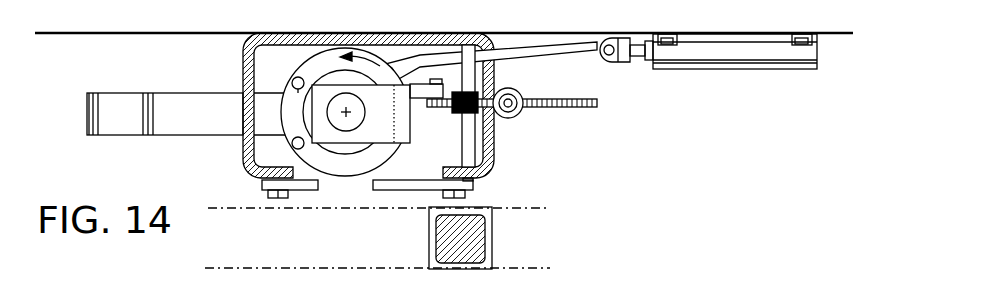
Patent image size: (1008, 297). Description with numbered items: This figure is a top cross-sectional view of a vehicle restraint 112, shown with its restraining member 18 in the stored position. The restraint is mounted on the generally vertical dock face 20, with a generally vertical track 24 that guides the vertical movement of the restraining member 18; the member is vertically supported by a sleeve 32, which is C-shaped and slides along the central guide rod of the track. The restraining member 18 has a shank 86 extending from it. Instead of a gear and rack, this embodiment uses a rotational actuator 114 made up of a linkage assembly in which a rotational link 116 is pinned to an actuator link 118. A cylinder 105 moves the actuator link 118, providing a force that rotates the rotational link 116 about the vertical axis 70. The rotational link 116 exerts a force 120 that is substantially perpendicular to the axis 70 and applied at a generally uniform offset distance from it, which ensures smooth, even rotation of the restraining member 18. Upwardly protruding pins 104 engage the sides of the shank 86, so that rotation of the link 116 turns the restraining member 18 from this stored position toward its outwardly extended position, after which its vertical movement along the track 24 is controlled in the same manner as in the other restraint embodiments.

The restraining member 18 is at (127, 138).
The dock face 20 is at (135, 37).
The track 24 is at (493, 142).
The sleeve 32 is at (382, 125).
The vertical axis 70 is at (347, 114).
The shank 86 is at (197, 138).
The upwardly protruding pins 104 is at (294, 88).
The cylinder 105 is at (737, 70).
The vehicle restraint 112 is at (560, 147).
The rotational actuator 114 is at (270, 57).
The rotational link 116 is at (346, 178).
The actuator link 118 is at (537, 60).
The force 120 is at (366, 58).